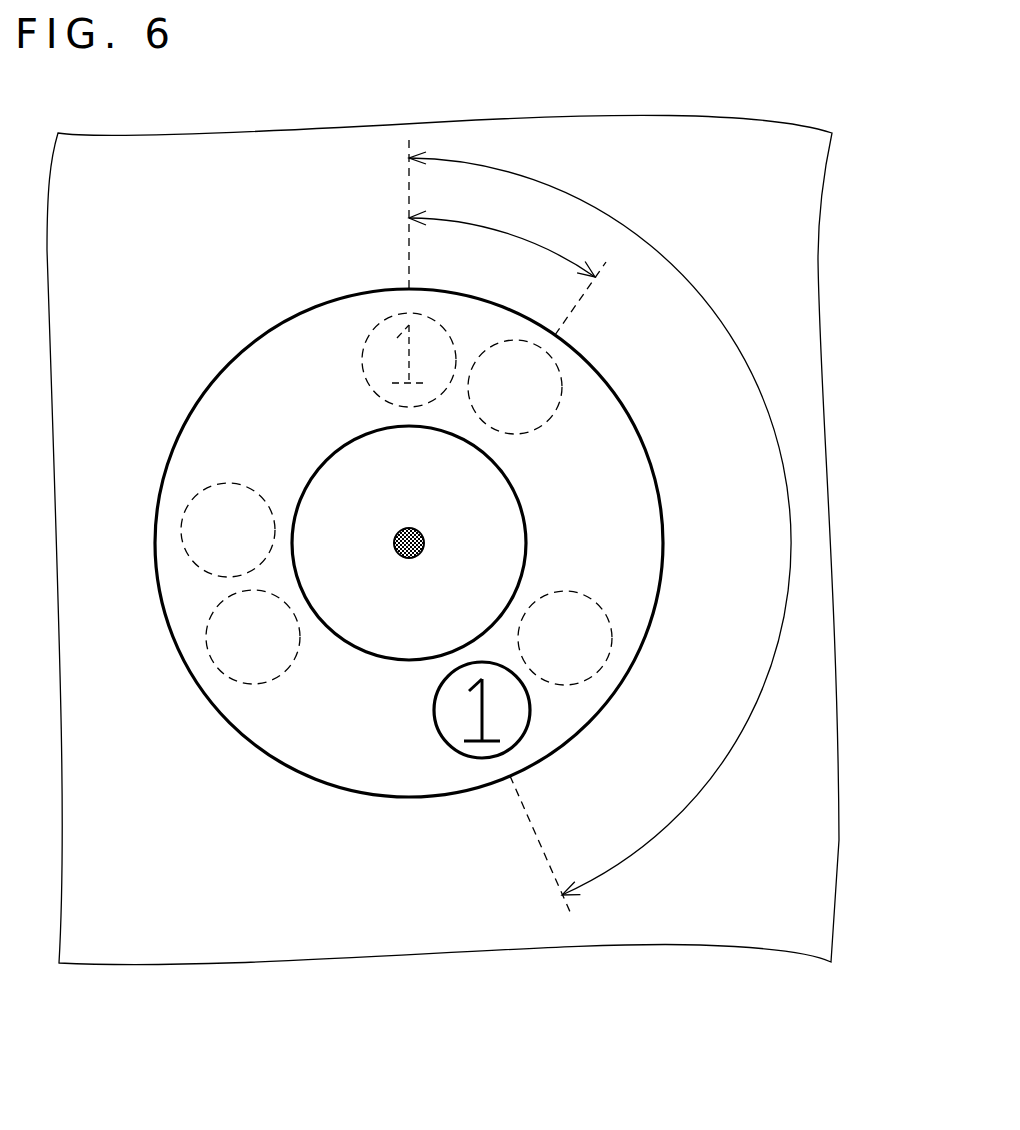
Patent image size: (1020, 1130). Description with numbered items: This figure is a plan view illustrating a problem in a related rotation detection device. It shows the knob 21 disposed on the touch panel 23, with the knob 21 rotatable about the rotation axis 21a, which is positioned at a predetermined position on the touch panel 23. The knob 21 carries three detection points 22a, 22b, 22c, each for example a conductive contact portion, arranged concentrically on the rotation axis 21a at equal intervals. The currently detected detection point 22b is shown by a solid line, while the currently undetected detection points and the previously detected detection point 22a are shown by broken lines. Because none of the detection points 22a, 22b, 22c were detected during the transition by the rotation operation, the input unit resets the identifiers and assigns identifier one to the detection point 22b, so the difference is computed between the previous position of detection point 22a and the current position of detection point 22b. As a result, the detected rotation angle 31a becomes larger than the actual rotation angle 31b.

The knob 21 is at (655, 474).
The rotation axis 21a is at (426, 545).
The detection point 22a is at (453, 343).
The detection point 22b is at (530, 712).
The detection point 22c is at (181, 531).
The touch panel 23 is at (818, 916).
The rotation angle 31a is at (650, 238).
The actual rotation angle 31b is at (510, 233).